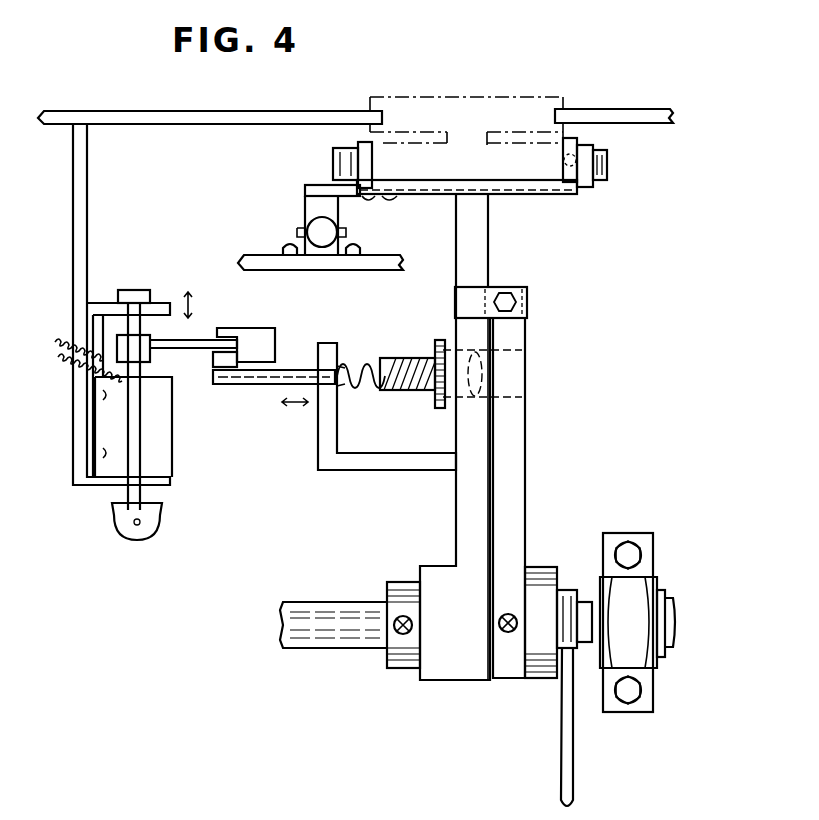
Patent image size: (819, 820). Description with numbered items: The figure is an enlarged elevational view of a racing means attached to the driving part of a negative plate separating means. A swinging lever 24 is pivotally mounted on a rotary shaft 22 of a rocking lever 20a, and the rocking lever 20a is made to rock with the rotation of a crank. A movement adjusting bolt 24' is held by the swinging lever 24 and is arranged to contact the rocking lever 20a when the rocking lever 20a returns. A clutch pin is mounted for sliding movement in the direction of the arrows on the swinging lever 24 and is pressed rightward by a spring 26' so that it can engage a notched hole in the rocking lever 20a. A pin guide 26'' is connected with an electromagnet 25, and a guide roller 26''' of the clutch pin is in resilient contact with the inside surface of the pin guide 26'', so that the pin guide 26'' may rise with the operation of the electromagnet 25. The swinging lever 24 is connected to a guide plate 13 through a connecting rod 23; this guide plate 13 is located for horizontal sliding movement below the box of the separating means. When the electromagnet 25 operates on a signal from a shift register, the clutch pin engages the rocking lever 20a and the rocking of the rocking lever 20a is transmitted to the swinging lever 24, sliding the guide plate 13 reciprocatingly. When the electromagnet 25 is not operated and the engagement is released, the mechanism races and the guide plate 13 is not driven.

The guide plate 13 is at (515, 97).
The connecting rod 23 is at (582, 189).
The electromagnet 25 is at (163, 452).
The pin guide 26'' is at (193, 334).
The guide roller 26''' is at (274, 354).
The spring 26' is at (391, 363).
The swinging lever 24 is at (454, 437).
The movement adjusting bolt 24' is at (510, 285).
The rocking lever 20a is at (512, 502).
The rotary shaft 22 is at (317, 648).